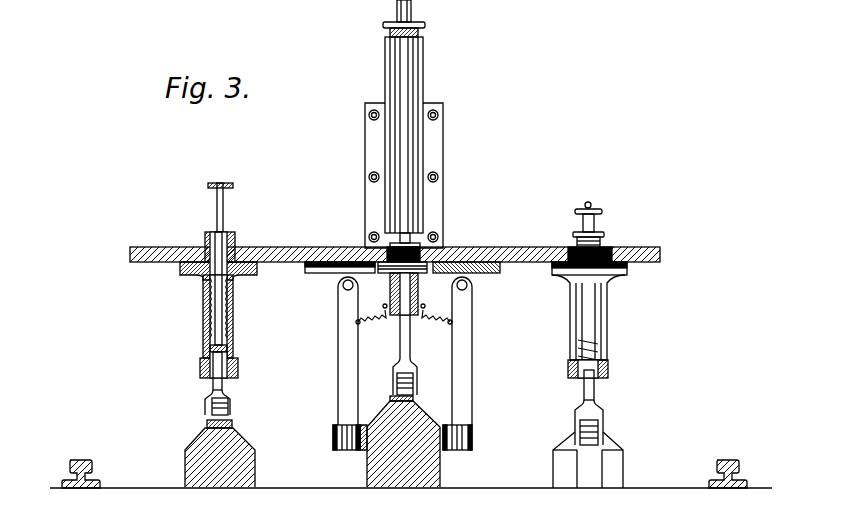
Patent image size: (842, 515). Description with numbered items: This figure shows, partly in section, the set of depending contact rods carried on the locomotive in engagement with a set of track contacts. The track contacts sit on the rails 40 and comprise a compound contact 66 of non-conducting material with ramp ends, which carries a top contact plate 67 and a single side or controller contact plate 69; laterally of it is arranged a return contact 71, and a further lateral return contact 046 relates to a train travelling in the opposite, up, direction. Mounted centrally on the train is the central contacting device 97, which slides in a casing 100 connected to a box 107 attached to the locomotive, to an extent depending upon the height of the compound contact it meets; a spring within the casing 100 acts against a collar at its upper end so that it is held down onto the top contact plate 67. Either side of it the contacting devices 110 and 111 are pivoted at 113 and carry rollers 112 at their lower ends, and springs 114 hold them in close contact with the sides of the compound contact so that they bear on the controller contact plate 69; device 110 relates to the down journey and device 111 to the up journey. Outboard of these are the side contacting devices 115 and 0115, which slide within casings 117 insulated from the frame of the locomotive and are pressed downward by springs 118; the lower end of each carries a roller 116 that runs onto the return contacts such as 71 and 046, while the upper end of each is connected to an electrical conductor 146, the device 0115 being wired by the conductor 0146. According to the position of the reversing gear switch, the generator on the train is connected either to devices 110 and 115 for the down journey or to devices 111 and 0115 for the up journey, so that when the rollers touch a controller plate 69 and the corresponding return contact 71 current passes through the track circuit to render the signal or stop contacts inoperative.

The rail 40 is at (88, 461).
The compound track contact 66 is at (430, 462).
The top contact plate 67 is at (390, 398).
The side controller contact plate 69 is at (365, 452).
The return contact 71 is at (207, 423).
The central contacting device 97 is at (398, 349).
The casing 100 is at (385, 74).
The box 107 is at (423, 171).
The contacting device 110 is at (341, 334).
The contacting device 111 is at (466, 342).
The roller 112 is at (333, 438).
The pivot 113 is at (343, 287).
The spring 114 is at (404, 323).
The side contacting device 115 is at (222, 360).
The roller 116 is at (232, 404).
The casing 117 is at (233, 324).
The spring 118 is at (235, 290).
The electrical conductor 146 is at (226, 197).
The wire 0146 is at (603, 214).
The side contacting device 0115 is at (585, 390).
The lateral return contact 046 is at (603, 446).